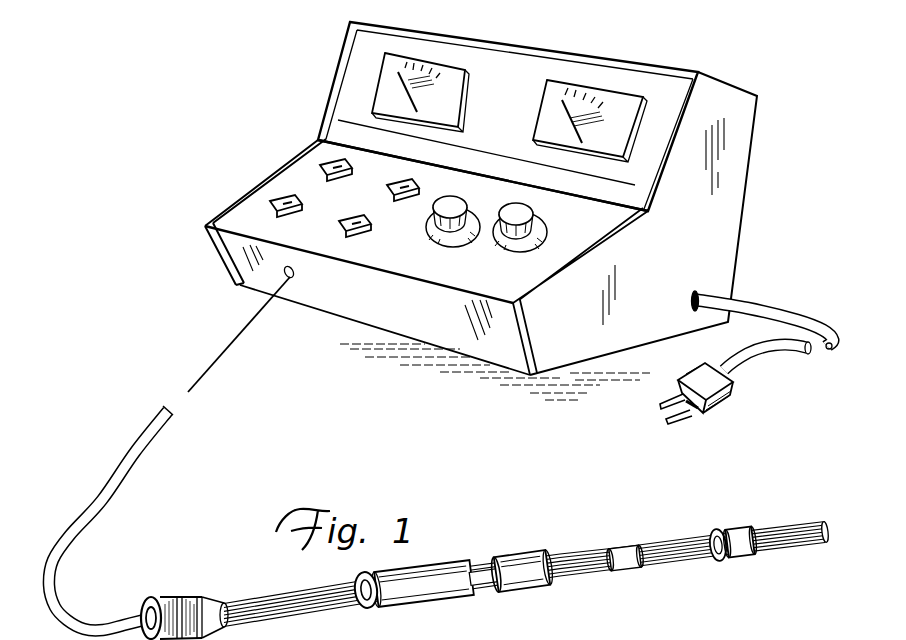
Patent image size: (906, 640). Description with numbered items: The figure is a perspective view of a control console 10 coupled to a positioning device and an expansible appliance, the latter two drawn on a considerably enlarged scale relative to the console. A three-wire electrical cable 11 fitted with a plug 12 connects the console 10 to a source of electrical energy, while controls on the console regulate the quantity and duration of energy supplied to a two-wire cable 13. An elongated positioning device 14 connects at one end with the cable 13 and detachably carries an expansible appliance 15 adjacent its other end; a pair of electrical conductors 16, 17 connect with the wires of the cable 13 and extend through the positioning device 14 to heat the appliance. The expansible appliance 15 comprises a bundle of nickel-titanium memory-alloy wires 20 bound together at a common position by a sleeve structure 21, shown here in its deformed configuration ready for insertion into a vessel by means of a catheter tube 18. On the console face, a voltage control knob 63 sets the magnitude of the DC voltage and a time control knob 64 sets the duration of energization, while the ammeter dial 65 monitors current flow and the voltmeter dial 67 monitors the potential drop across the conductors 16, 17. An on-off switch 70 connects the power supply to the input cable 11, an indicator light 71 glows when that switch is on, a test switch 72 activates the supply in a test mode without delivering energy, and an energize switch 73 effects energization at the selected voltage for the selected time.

The control console 10 is at (725, 60).
The three-wire electrical cable 11 is at (767, 303).
The plug 12 is at (727, 388).
The two-wire cable 13 is at (118, 455).
The elongated positioning device 14 is at (572, 550).
The expansible appliance 15 is at (715, 518).
The electrical conductor 16 is at (502, 555).
The electrical conductor 17 is at (486, 585).
The catheter tube 18 is at (430, 563).
The wires 20 is at (805, 545).
The sleeve structure 21 is at (740, 555).
The voltage control knob 63 is at (453, 198).
The time control knob 64 is at (523, 213).
The dial 65 is at (583, 90).
The dial 67 is at (420, 63).
The on-off switch 70 is at (272, 199).
The indicator light 71 is at (322, 163).
The test switch 72 is at (407, 175).
The energize switch 73 is at (374, 228).